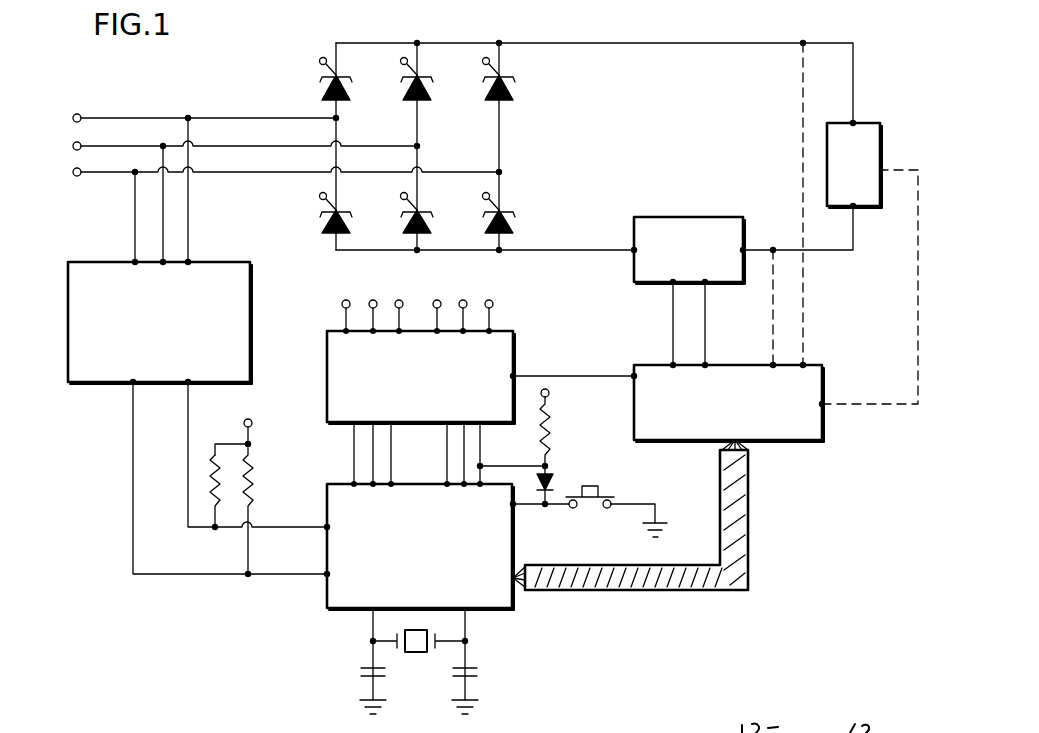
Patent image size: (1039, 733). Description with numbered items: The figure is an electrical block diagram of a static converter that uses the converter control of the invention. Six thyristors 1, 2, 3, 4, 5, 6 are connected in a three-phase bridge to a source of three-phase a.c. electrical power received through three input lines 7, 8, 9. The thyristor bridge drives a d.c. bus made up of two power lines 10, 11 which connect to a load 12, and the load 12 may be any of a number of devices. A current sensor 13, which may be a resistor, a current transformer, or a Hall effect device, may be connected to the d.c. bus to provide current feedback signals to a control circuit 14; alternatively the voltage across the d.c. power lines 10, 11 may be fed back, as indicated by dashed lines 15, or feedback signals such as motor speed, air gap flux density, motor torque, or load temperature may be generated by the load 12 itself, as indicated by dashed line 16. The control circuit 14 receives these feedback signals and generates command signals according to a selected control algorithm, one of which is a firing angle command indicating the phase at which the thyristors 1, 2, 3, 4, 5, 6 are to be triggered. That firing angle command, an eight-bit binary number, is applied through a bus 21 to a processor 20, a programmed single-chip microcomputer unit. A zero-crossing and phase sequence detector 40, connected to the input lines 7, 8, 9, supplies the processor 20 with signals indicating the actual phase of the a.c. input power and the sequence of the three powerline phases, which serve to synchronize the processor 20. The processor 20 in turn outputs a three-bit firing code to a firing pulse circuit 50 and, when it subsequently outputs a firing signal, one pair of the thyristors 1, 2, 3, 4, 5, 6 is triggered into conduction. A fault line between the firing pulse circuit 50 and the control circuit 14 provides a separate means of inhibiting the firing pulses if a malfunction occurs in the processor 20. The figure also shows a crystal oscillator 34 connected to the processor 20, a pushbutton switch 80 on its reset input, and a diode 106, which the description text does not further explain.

The thyristor 1 is at (350, 91).
The thyristor 2 is at (346, 222).
The thyristor 3 is at (431, 91).
The thyristor 4 is at (428, 222).
The thyristor 5 is at (513, 91).
The thyristor 6 is at (510, 222).
The power line 7 is at (73, 116).
The power line 8 is at (73, 145).
The power line 9 is at (73, 172).
The power line 10 is at (625, 43).
The power line 11 is at (575, 250).
The load 12 is at (868, 123).
The current sensor 13 is at (717, 217).
The control circuit 14 is at (814, 441).
The dashed lines 15 is at (773, 298).
The dashed line 16 is at (912, 406).
The processor 20 is at (486, 609).
The bus 21 is at (720, 590).
The crystal oscillator 34 is at (362, 636).
The zero-crossing and phase sequence detector 40 is at (68, 356).
The firing pulse circuit 50 is at (327, 365).
The reset pushbutton switch 80 is at (614, 494).
The diode 106 is at (553, 480).